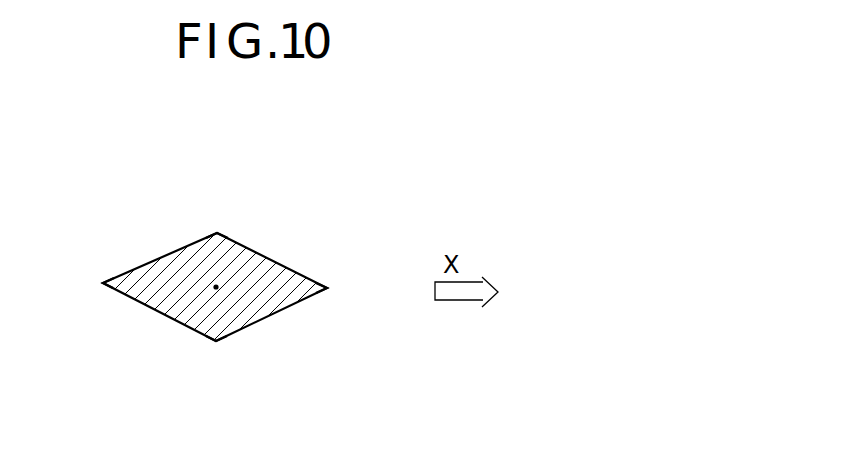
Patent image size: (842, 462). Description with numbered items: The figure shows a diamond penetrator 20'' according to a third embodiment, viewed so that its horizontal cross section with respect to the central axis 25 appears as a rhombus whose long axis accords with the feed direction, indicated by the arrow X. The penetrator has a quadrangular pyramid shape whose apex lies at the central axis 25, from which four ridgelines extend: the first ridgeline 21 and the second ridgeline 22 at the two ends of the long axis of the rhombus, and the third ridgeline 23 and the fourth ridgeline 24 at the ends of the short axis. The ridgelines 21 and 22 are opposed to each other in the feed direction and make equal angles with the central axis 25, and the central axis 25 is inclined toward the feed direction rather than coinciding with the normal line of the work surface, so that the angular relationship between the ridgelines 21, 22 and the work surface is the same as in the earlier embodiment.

The diamond penetrator 20'' is at (215, 239).
The first ridgeline 21 is at (103, 283).
The second ridgeline 22 is at (327, 288).
The third ridgeline 23 is at (216, 341).
The fourth ridgeline 24 is at (217, 231).
The central axis 25 is at (217, 285).